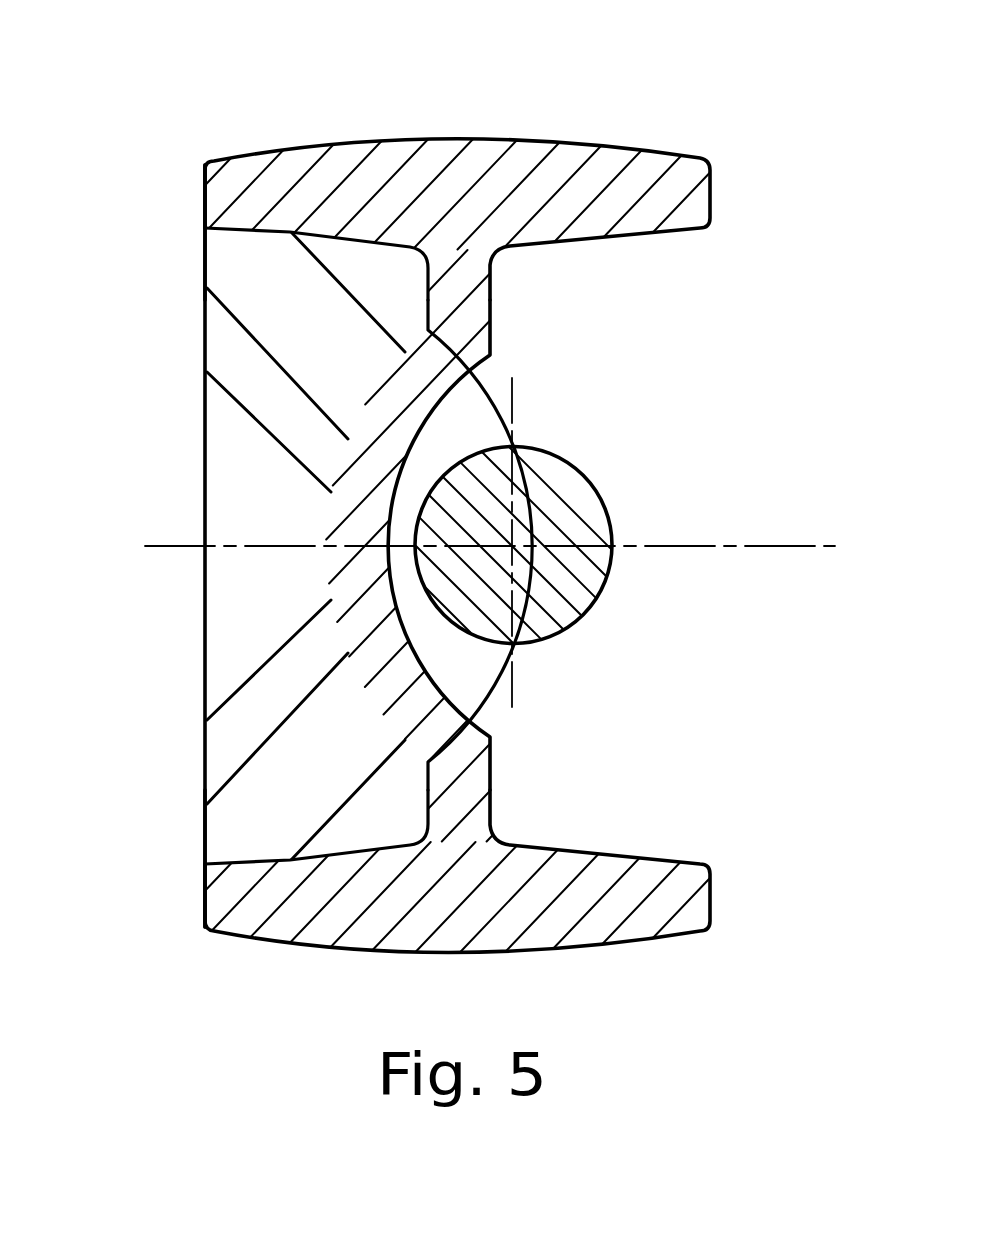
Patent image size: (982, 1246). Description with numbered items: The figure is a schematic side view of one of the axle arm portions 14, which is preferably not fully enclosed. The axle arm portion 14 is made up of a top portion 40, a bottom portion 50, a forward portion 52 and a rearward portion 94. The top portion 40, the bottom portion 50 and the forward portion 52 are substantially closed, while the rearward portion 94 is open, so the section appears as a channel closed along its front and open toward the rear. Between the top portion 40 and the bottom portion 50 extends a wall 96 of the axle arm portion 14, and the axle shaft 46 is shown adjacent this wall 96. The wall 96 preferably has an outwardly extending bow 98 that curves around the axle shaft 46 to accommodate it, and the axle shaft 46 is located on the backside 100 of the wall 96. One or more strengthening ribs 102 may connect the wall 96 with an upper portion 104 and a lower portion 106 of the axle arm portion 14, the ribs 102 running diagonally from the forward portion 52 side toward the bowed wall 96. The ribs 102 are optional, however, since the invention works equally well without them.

The top portion 40 is at (497, 88).
The first axle arm portion 14 is at (530, 158).
The forward portion 52 is at (150, 203).
The upper portion 104 is at (190, 270).
The strengthening ribs 102 is at (253, 425).
The wall 96 is at (491, 318).
The backside 100 is at (550, 400).
The axle shaft 46 is at (603, 507).
The outwardly extending bow 98 is at (295, 512).
The lower portion 106 is at (188, 838).
The rearward portion 94 is at (705, 693).
The bottom portion 50 is at (405, 980).